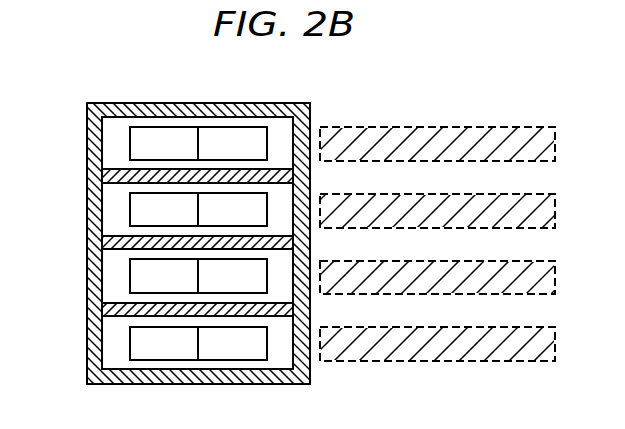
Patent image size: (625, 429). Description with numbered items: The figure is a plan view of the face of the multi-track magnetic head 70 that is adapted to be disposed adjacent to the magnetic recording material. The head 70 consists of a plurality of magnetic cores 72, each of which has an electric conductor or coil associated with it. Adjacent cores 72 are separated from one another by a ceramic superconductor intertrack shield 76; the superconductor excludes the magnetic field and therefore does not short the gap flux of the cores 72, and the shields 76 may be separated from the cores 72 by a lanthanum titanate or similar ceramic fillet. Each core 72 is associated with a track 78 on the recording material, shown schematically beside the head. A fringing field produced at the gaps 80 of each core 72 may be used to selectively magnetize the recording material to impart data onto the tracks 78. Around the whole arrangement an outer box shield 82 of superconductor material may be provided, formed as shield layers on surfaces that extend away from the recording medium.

The multi-track magnetic head 70 is at (305, 248).
The magnetic core 72 is at (232, 132).
The ceramic superconductor intertrack shield 76 is at (287, 177).
The track 78 is at (505, 127).
The gap 80 is at (198, 138).
The outer box shield 82 is at (88, 120).